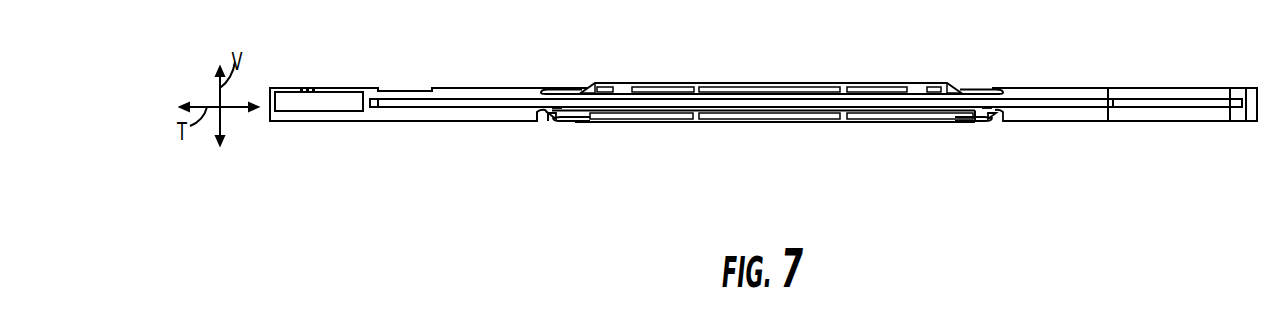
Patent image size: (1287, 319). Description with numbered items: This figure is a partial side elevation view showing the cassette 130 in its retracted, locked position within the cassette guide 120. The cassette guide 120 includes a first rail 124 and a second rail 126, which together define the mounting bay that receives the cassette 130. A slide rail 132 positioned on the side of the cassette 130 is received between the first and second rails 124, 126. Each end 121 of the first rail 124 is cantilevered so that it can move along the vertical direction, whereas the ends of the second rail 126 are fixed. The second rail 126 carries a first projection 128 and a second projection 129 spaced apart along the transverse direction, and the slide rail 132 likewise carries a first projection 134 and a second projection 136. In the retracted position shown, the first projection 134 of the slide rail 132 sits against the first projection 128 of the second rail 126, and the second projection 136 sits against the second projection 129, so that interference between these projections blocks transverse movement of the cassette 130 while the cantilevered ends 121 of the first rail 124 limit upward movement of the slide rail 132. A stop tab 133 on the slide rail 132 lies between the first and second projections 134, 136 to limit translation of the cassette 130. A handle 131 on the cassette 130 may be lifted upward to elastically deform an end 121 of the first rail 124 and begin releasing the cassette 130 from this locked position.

The cassette guide 120 is at (867, 82).
The end of first rail 121 is at (549, 87).
The first rail 124 is at (622, 82).
The second rail 126 is at (643, 120).
The first projection 128 is at (540, 120).
The second projection 129 is at (1003, 118).
The cassette 130 is at (1158, 87).
The handle 131 is at (314, 87).
The slide rail 132 is at (1068, 103).
The stop tab 133 is at (847, 112).
The first projection 134 is at (554, 112).
The second projection 136 is at (985, 116).